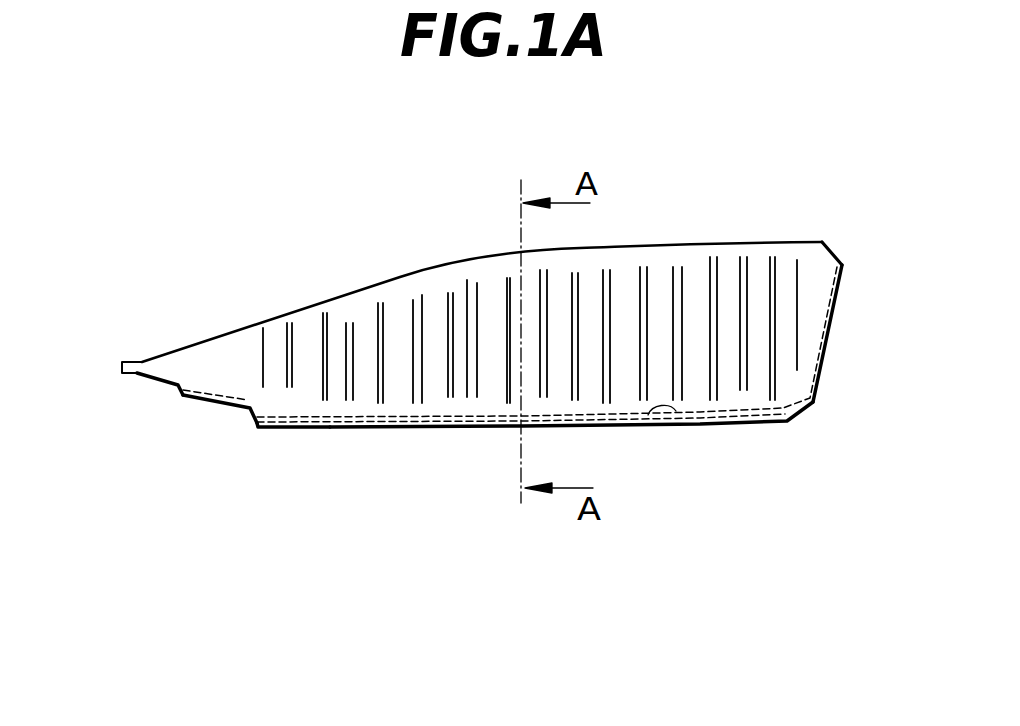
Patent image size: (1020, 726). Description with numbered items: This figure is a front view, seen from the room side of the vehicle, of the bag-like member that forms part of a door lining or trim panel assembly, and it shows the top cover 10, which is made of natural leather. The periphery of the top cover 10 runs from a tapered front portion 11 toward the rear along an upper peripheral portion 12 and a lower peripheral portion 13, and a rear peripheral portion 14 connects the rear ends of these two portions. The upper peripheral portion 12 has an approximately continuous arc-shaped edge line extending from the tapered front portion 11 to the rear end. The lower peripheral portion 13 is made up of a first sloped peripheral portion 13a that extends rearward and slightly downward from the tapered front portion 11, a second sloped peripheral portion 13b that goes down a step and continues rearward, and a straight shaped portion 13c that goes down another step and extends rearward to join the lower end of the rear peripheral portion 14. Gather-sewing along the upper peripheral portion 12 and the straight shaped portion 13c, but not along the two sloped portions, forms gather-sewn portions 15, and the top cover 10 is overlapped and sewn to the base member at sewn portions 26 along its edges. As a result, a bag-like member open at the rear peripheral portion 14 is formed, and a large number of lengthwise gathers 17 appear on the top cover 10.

The top cover 10 is at (787, 248).
The tapered front portion 11 is at (123, 363).
The upper peripheral portion 12 is at (428, 275).
The lower peripheral portion 13 is at (467, 430).
The first sloped peripheral portion 13a is at (152, 380).
The second sloped peripheral portion 13b is at (223, 405).
The straight shaped portion 13c is at (297, 430).
The rear peripheral portion 14 is at (828, 347).
The gather-sewn portion 15 is at (670, 428).
The gathers 17 is at (352, 327).
The sewn portion 26 is at (198, 398).